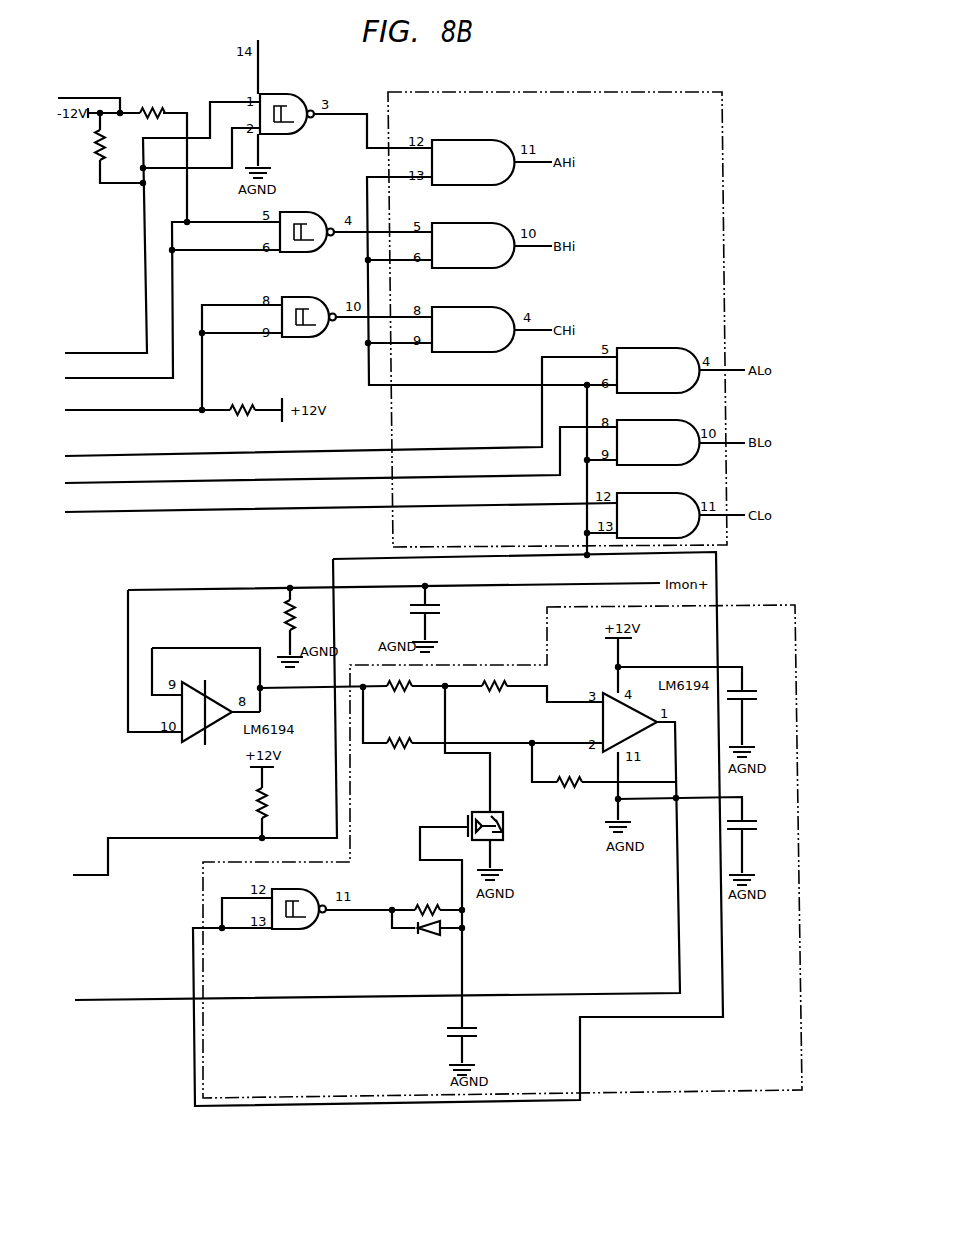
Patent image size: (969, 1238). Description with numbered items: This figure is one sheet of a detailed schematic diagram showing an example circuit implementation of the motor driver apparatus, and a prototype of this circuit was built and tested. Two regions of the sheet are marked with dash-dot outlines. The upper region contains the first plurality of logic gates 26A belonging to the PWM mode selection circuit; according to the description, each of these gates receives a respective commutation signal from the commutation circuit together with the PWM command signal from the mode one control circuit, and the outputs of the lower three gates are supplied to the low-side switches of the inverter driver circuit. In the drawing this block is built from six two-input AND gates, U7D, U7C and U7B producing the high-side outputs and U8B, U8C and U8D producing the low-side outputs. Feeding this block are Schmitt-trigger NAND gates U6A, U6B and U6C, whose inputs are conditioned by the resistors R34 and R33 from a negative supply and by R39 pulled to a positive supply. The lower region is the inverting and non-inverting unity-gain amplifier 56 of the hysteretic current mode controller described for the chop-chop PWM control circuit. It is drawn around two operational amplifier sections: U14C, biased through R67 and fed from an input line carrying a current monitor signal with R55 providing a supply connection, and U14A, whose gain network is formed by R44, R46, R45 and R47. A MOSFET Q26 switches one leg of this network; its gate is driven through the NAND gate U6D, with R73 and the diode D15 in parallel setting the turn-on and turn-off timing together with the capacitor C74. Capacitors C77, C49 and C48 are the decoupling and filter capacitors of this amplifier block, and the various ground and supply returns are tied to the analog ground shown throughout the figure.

The first plurality of logic gates 26A is at (566, 299).
The 1/–1 amplifier 56 is at (735, 605).
The operational amplifier U14A is at (630, 722).
The operational amplifier U14C is at (207, 712).
The MOSFET transistor Q26 is at (516, 829).
The diode D15 is at (429, 946).
The NAND gate U6A is at (287, 118).
The NAND gate U6B is at (308, 234).
The NAND gate U6C is at (311, 319).
The NAND gate U6D is at (299, 911).
The AND gate U7B is at (473, 329).
The AND gate U7C is at (473, 245).
The AND gate U7D is at (473, 162).
The AND gate U8B is at (658, 370).
The AND gate U8C is at (658, 442).
The AND gate U8D is at (658, 515).
The resistor R33 is at (83, 145).
The resistor R34 is at (166, 102).
The resistor R39 is at (241, 411).
The resistor R44 is at (400, 702).
The resistor R45 is at (400, 760).
The resistor R46 is at (495, 702).
The resistor R47 is at (571, 782).
The resistor R55 is at (281, 803).
The resistor R67 is at (274, 613).
The resistor R73 is at (427, 888).
The capacitor C48 is at (759, 833).
The capacitor C49 is at (759, 707).
The capacitor C74 is at (483, 1038).
The capacitor C77 is at (446, 611).